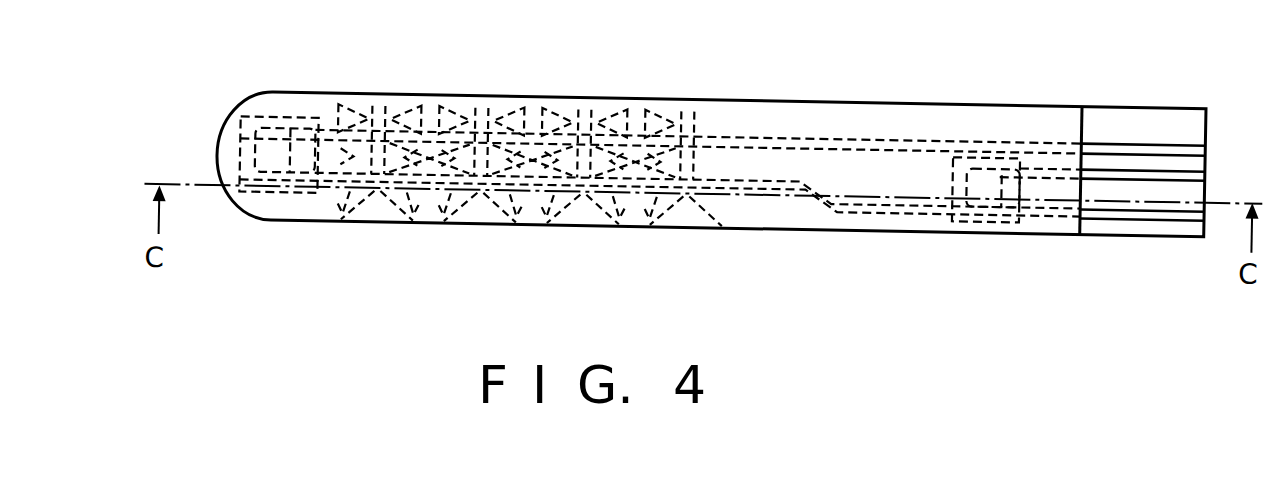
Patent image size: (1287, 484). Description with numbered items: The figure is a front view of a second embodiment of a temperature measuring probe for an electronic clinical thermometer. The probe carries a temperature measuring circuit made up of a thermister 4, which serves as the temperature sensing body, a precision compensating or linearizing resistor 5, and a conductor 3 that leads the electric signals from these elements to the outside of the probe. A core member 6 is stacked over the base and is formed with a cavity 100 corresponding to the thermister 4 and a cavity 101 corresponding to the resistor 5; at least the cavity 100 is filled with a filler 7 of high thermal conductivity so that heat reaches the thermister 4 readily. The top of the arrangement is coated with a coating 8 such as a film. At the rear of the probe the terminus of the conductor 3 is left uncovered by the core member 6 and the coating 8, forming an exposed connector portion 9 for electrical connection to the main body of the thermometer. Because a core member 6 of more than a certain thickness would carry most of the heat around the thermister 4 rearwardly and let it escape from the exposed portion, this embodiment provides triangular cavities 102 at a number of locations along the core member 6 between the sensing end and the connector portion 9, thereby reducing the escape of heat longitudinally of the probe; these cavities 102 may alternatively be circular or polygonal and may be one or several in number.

The conductor 3 is at (753, 129).
The thermister 4 is at (240, 140).
The linearizing resistor 5 is at (1017, 184).
The core member 6 is at (763, 203).
The filler 7 is at (242, 167).
The coating 8 is at (590, 92).
The connector portion 9 is at (1172, 92).
The cavity 100 is at (305, 117).
The cavity 101 is at (968, 155).
The triangular cavities 102 is at (430, 226).